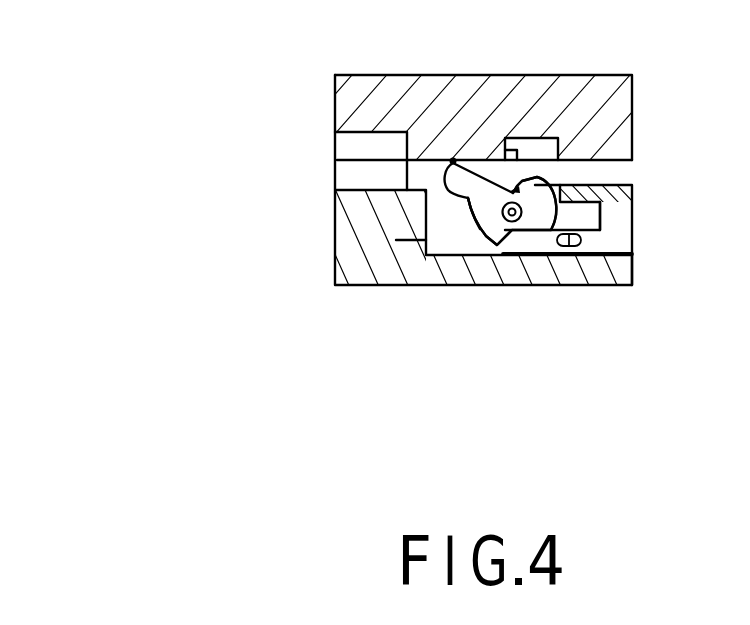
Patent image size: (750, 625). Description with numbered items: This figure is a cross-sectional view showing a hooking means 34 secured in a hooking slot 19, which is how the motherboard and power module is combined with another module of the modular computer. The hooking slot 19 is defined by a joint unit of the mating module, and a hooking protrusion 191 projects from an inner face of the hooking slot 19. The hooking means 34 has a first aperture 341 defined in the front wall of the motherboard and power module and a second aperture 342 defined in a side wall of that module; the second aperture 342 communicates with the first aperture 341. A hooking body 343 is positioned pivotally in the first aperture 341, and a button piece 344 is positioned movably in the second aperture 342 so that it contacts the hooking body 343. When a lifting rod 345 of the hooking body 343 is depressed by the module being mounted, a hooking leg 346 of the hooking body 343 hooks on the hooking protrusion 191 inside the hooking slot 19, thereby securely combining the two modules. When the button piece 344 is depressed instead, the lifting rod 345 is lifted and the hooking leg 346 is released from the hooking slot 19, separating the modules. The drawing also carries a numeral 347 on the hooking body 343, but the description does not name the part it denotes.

The hooking means 34 is at (396, 240).
The hooking slot 19 is at (538, 138).
The hooking protrusion 191 is at (503, 150).
The first aperture 341 is at (444, 205).
The second aperture 342 is at (644, 222).
The hooking body 343 is at (459, 218).
The button piece 344 is at (610, 238).
The lifting rod 345 is at (453, 158).
The hooking leg 346 is at (538, 186).
The lower arm of pawl 347 is at (487, 241).